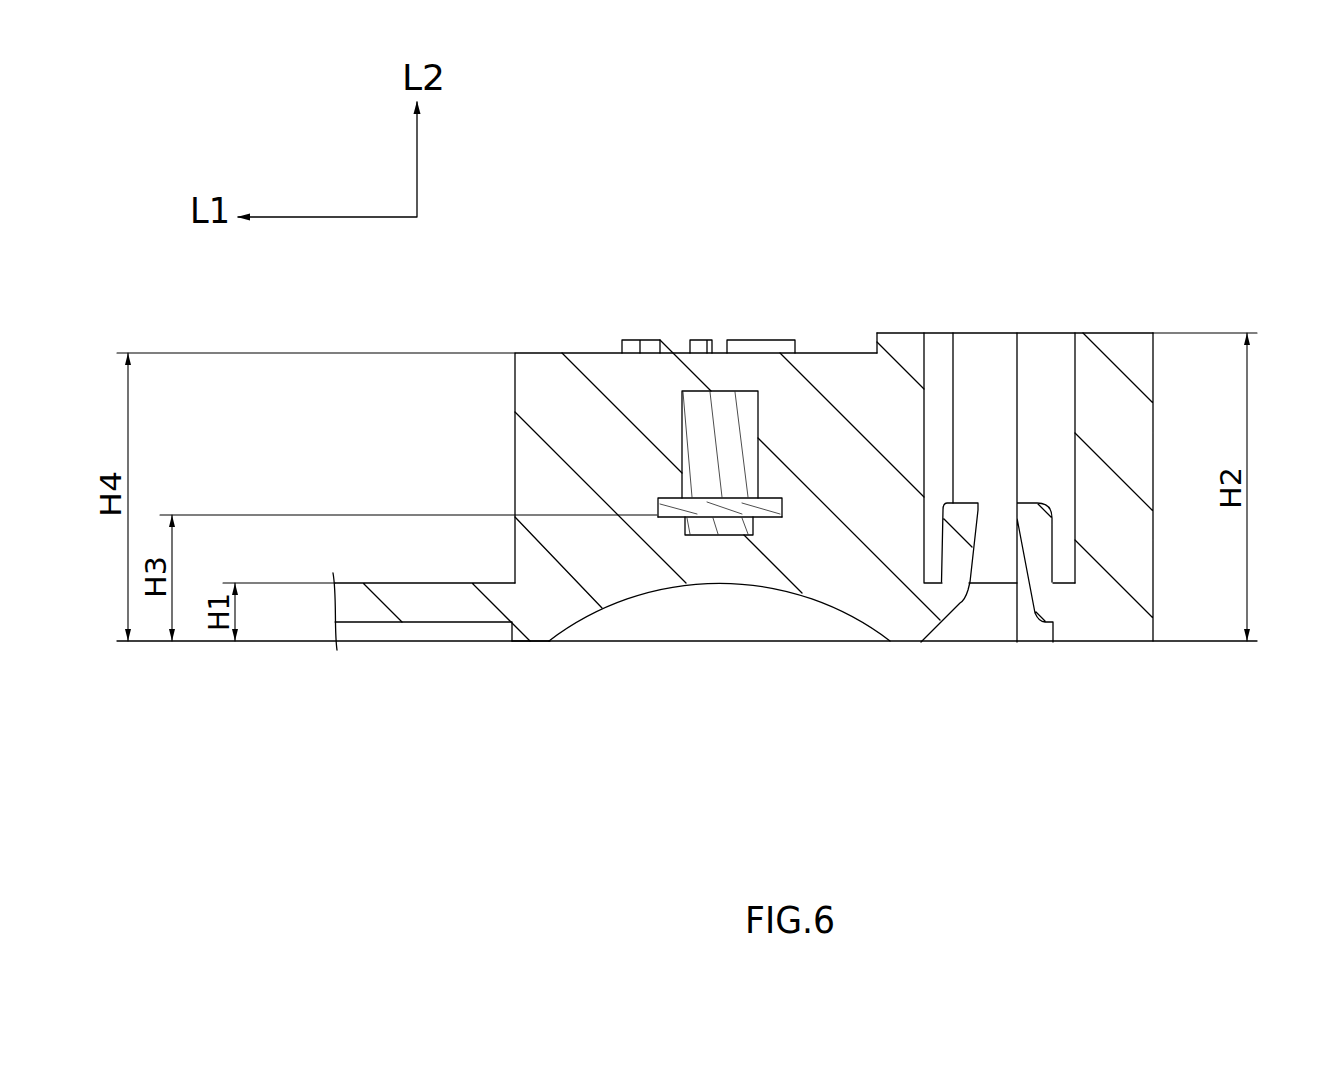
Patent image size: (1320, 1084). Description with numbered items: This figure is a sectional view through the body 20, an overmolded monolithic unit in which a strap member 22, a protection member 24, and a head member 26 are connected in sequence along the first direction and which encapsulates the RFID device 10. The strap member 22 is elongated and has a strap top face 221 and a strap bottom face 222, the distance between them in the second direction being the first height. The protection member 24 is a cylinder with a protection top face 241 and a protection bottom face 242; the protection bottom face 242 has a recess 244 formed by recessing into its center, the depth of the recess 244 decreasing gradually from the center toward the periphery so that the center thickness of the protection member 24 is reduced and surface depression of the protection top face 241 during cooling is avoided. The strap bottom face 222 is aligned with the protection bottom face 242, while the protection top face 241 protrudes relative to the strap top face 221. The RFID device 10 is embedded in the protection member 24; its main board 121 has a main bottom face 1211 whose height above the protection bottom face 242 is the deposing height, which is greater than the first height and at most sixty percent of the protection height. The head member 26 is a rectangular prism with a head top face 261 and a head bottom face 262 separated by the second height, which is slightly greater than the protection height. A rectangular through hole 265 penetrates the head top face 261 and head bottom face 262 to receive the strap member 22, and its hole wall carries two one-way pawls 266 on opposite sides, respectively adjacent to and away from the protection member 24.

The RFID device 10 is at (740, 384).
The main board 121 is at (658, 498).
The main bottom face 1211 is at (777, 518).
The body 20 is at (602, 228).
The strap member 22 is at (422, 583).
The strap top face 221 is at (347, 583).
The strap bottom face 222 is at (423, 642).
The protection member 24 is at (548, 348).
The protection top face 241 is at (597, 352).
The protection bottom face 242 is at (533, 642).
The recess 244 is at (630, 598).
The head member 26 is at (902, 332).
The head top face 261 is at (1113, 332).
The head bottom face 262 is at (1055, 623).
The through hole 265 is at (1073, 370).
The one-way pawl 266 is at (958, 518).